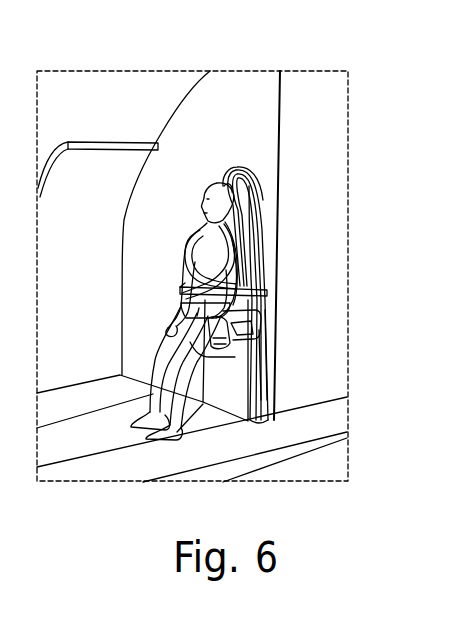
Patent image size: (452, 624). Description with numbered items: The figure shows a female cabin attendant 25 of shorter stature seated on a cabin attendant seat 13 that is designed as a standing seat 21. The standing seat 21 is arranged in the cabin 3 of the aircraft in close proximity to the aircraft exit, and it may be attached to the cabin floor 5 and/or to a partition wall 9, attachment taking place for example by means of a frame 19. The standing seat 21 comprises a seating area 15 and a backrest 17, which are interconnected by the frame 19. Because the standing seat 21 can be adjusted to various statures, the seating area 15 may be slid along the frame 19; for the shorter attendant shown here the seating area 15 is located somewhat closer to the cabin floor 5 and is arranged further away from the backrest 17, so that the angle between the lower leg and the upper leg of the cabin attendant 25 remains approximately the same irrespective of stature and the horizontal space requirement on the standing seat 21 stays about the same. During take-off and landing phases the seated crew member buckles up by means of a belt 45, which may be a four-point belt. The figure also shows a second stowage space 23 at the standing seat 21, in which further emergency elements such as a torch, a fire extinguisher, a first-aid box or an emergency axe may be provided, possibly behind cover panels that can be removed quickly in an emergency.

The cabin 3 is at (146, 87).
The partition wall 9 is at (251, 98).
The belt 45 is at (178, 197).
The cabin floor 5 is at (118, 467).
The cabin attendant seat 13 is at (272, 184).
The standing seat 21 is at (280, 213).
The cabin attendant 25 is at (227, 177).
The seating area 15 is at (261, 347).
The frame 19 is at (263, 322).
The second stowage space 23 is at (252, 302).
The backrest 17 is at (236, 263).